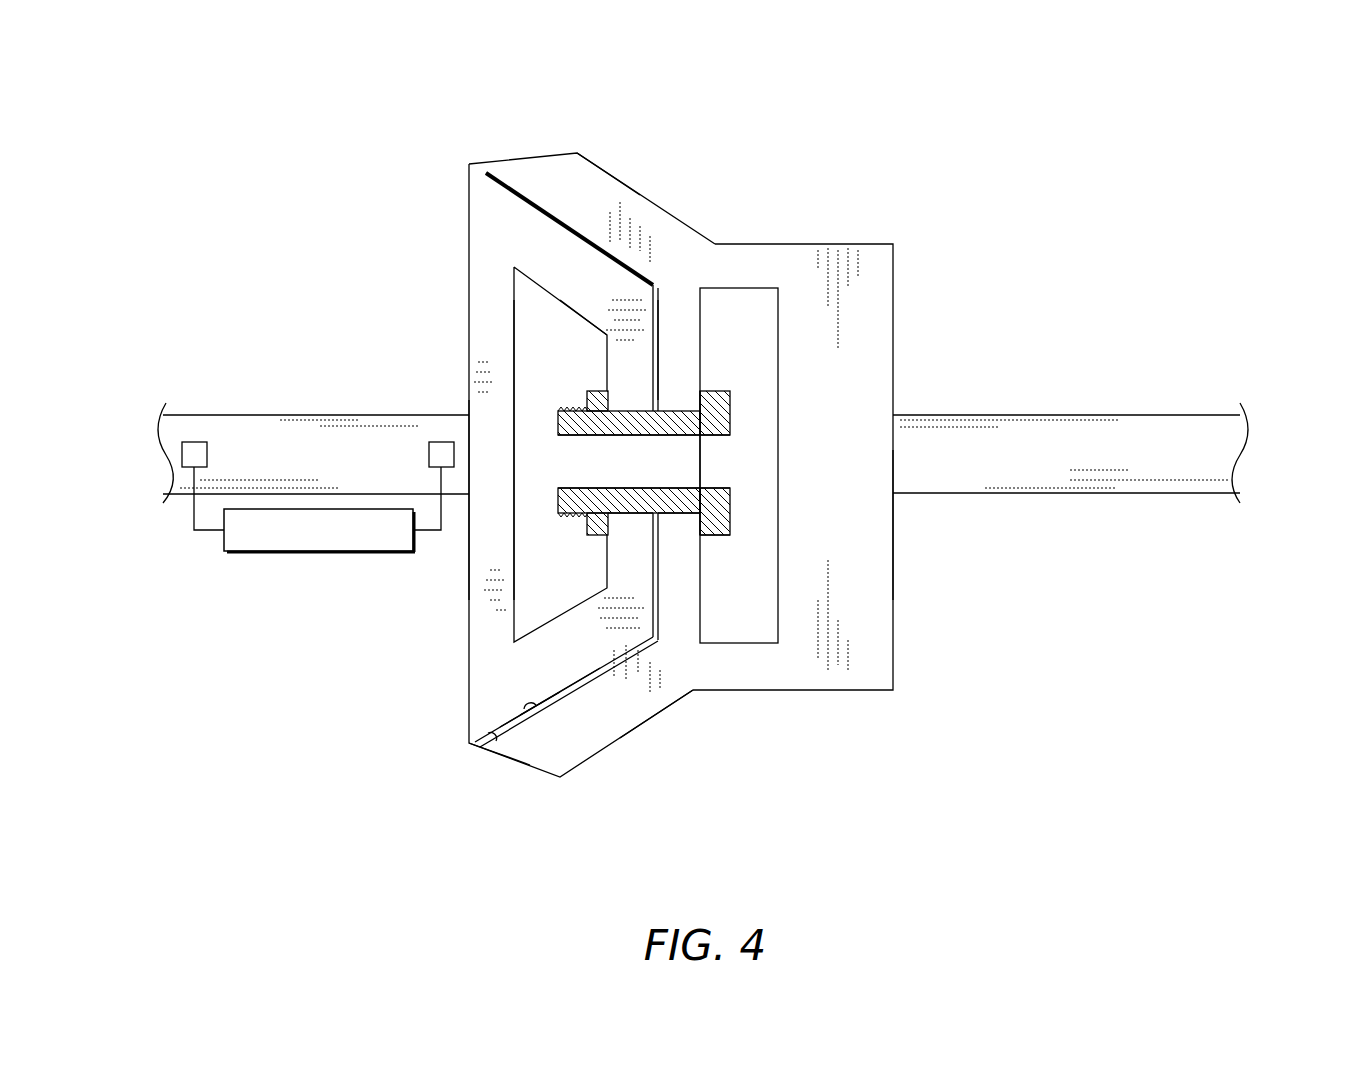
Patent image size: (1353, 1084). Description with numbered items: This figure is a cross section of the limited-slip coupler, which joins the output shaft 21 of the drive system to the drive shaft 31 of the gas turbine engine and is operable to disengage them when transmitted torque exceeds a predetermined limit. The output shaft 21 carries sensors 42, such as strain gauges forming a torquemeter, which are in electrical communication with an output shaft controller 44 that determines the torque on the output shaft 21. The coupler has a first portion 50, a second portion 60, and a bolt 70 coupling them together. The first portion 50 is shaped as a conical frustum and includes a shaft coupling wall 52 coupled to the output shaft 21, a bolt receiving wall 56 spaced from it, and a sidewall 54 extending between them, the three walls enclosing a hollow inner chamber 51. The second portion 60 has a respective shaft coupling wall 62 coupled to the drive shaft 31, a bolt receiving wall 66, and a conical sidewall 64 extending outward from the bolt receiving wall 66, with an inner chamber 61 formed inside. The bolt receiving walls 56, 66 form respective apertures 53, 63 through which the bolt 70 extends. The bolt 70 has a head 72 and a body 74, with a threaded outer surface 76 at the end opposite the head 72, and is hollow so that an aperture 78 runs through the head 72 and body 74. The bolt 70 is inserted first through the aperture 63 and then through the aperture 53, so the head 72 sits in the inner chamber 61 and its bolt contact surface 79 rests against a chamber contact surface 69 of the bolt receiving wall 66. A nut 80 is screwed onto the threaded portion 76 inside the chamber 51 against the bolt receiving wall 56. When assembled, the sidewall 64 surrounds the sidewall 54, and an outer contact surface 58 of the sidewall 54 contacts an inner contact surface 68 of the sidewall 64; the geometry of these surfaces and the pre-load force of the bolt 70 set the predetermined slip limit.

The output shaft 21 is at (258, 413).
The drive shaft 31 is at (1075, 413).
The sensors 42 is at (192, 440).
The output shaft controller 44 is at (278, 553).
The first portion 50 is at (460, 298).
The inner chamber 51 is at (555, 561).
The shaft coupling wall 52 is at (487, 530).
The aperture 53 is at (637, 537).
The sidewall 54 is at (548, 255).
The bolt receiving wall 56 is at (627, 378).
The outer contact surface 58 is at (493, 740).
The second portion 60 is at (808, 226).
The inner chamber 61 is at (750, 611).
The shaft coupling wall 62 is at (845, 520).
The aperture 63 is at (678, 537).
The sidewall 64 is at (598, 183).
The bolt receiving wall 66 is at (673, 350).
The inner contact surface 68 is at (532, 700).
The chamber contact surface 69 is at (710, 392).
The bolt 70 is at (838, 513).
The head 72 is at (712, 392).
The body 74 is at (627, 500).
The threaded outer surface 76 is at (574, 402).
The aperture 78 is at (648, 446).
The bolt contact surface 79 is at (929, 623).
The nut 80 is at (597, 540).